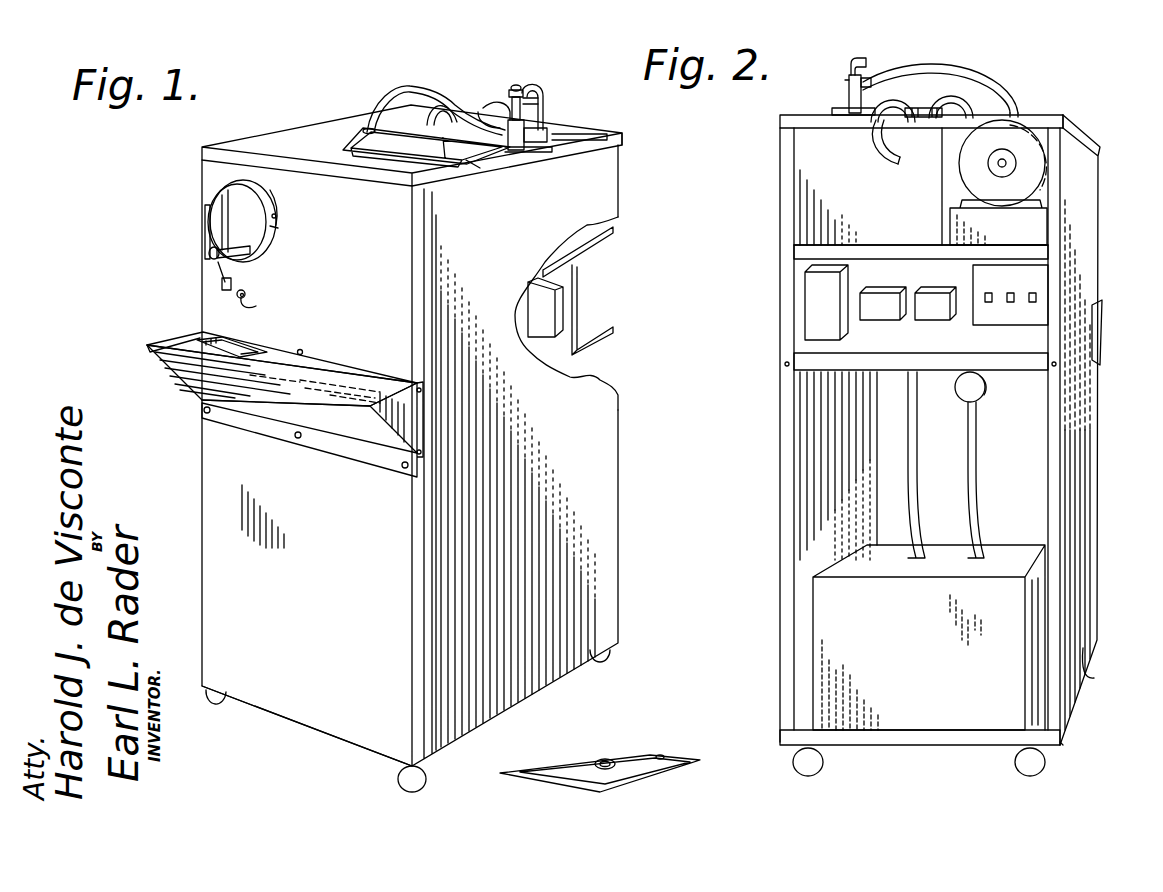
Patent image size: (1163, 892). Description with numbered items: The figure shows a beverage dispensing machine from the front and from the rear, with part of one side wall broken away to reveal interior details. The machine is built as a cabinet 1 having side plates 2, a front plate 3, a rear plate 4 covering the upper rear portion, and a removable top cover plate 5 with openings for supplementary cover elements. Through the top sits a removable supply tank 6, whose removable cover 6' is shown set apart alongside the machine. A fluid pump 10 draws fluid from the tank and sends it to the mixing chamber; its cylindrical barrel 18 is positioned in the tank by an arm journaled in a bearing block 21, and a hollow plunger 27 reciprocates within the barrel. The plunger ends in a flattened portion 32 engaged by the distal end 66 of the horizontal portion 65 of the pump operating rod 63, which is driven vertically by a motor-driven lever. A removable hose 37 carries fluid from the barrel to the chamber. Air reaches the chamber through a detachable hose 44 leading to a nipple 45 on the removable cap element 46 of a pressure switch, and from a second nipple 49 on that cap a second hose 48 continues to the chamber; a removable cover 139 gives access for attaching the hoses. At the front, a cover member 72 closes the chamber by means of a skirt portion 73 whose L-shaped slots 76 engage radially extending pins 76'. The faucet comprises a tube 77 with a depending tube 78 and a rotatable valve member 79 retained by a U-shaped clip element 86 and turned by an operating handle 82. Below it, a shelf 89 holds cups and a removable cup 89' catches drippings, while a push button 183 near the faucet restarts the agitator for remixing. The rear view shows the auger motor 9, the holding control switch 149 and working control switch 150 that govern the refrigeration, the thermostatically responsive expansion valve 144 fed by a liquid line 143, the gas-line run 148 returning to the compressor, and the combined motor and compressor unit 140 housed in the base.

In FIG. 1, the cabinet 1 is at (620, 512).
In FIG. 2, the cabinet 1 is at (1098, 472).
In FIG. 1, the side plates 2 is at (613, 458).
In FIG. 2, the side plates 2 is at (808, 527).
In FIG. 1, the front plate 3 is at (305, 718).
In FIG. 1, the rear plate 4 is at (614, 235).
In FIG. 2, the rear plate 4 is at (822, 222).
In FIG. 1, the removable top cover plate 5 is at (277, 146).
In FIG. 2, the removable top cover plate 5 is at (1101, 148).
In FIG. 1, the supply tank 6 is at (404, 147).
In FIG. 1, the removable cover 6' is at (600, 754).
In FIG. 2, the auger motor 9 is at (1036, 173).
In FIG. 1, the fluid pump 10 is at (522, 152).
In FIG. 2, the fluid pump 10 is at (848, 95).
In FIG. 1, the cylindrical barrel 18 is at (471, 165).
In FIG. 1, the bearing block 21 is at (566, 133).
In FIG. 2, the bearing block 21 is at (840, 120).
In FIG. 1, the hollow plunger 27 is at (550, 113).
In FIG. 2, the hollow plunger 27 is at (864, 82).
In FIG. 1, the flattened portion 32 is at (520, 89).
In FIG. 2, the flattened portion 32 is at (868, 78).
In FIG. 1, the removable hose 37 is at (404, 84).
In FIG. 2, the removable hose 37 is at (990, 84).
In FIG. 1, the detachable hose 44 is at (483, 106).
In FIG. 2, the detachable hose 44 is at (880, 164).
In FIG. 2, the nipple 45 is at (886, 140).
In FIG. 2, the removable cap element 46 is at (953, 108).
In FIG. 1, the second hose 48 is at (445, 104).
In FIG. 2, the second hose 48 is at (960, 86).
In FIG. 2, the second nipple 49 is at (923, 104).
In FIG. 1, the pump operating rod 63 is at (542, 97).
In FIG. 2, the pump operating rod 63 is at (846, 79).
In FIG. 1, the horizontal portion 65 is at (545, 88).
In FIG. 2, the horizontal portion 65 is at (849, 63).
In FIG. 1, the distal end 66 is at (516, 85).
In FIG. 1, the cover member 72 is at (227, 189).
In FIG. 1, the skirt portion 73 is at (265, 194).
In FIG. 1, the L-shaped slots 76 is at (305, 238).
In FIG. 1, the radially extending pins 76' is at (312, 218).
In FIG. 1, the tube 77 is at (258, 246).
In FIG. 1, the depending tube 78 is at (227, 279).
In FIG. 1, the valve member 79 is at (208, 253).
In FIG. 1, the operating handle 82 is at (205, 225).
In FIG. 1, the U-shaped clip element 86 is at (224, 262).
In FIG. 1, the shelf 89 is at (285, 401).
In FIG. 2, the shelf 89 is at (1127, 326).
In FIG. 1, the removable cup 89' is at (154, 332).
In FIG. 1, the removable cover 139 is at (350, 127).
In FIG. 2, the combined motor and compressor unit 140 is at (957, 720).
In FIG. 2, the liquid line 143 is at (968, 498).
In FIG. 2, the thermostatically responsive expansion valve 144 is at (986, 393).
In FIG. 2, the run 148 is at (912, 505).
In FIG. 2, the holding control switch 149 is at (941, 292).
In FIG. 2, the working control switch 150 is at (888, 321).
In FIG. 1, the push button 183 is at (256, 306).